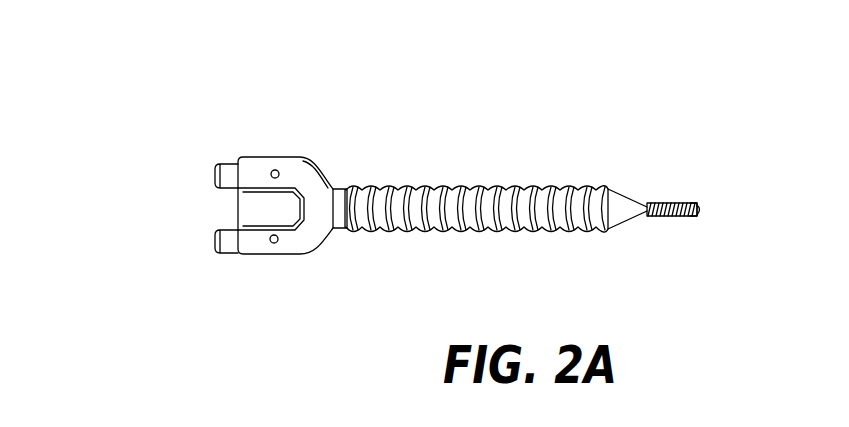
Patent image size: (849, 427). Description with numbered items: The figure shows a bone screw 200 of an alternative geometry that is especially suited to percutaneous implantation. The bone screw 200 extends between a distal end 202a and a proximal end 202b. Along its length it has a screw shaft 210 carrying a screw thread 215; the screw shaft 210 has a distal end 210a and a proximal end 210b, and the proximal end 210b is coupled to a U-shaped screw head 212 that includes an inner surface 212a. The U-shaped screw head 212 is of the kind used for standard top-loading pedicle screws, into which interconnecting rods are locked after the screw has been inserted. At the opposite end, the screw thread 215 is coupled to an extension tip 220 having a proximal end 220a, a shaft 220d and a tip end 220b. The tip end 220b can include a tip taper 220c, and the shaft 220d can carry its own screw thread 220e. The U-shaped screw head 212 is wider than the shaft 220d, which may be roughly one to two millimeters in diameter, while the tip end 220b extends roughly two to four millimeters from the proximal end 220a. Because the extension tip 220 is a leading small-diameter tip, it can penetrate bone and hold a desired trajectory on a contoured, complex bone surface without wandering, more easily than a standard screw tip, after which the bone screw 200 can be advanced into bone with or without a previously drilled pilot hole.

The bone screw 200 is at (464, 191).
The distal end 202a is at (709, 189).
The proximal end 202b is at (218, 169).
The screw shaft 210 is at (483, 225).
The distal end of screw shaft 210a is at (648, 204).
The proximal end of screw shaft 210b is at (318, 245).
The U-shaped screw head 212 is at (242, 156).
The inner surface 212a is at (242, 189).
The screw thread 215 is at (505, 233).
The extension tip 220 is at (725, 204).
The proximal end of extension tip 220a is at (652, 216).
The tip end 220b is at (697, 204).
The tip taper 220c is at (694, 215).
The shaft of extension tip 220d is at (667, 217).
The screw thread of extension tip shaft 220e is at (680, 217).